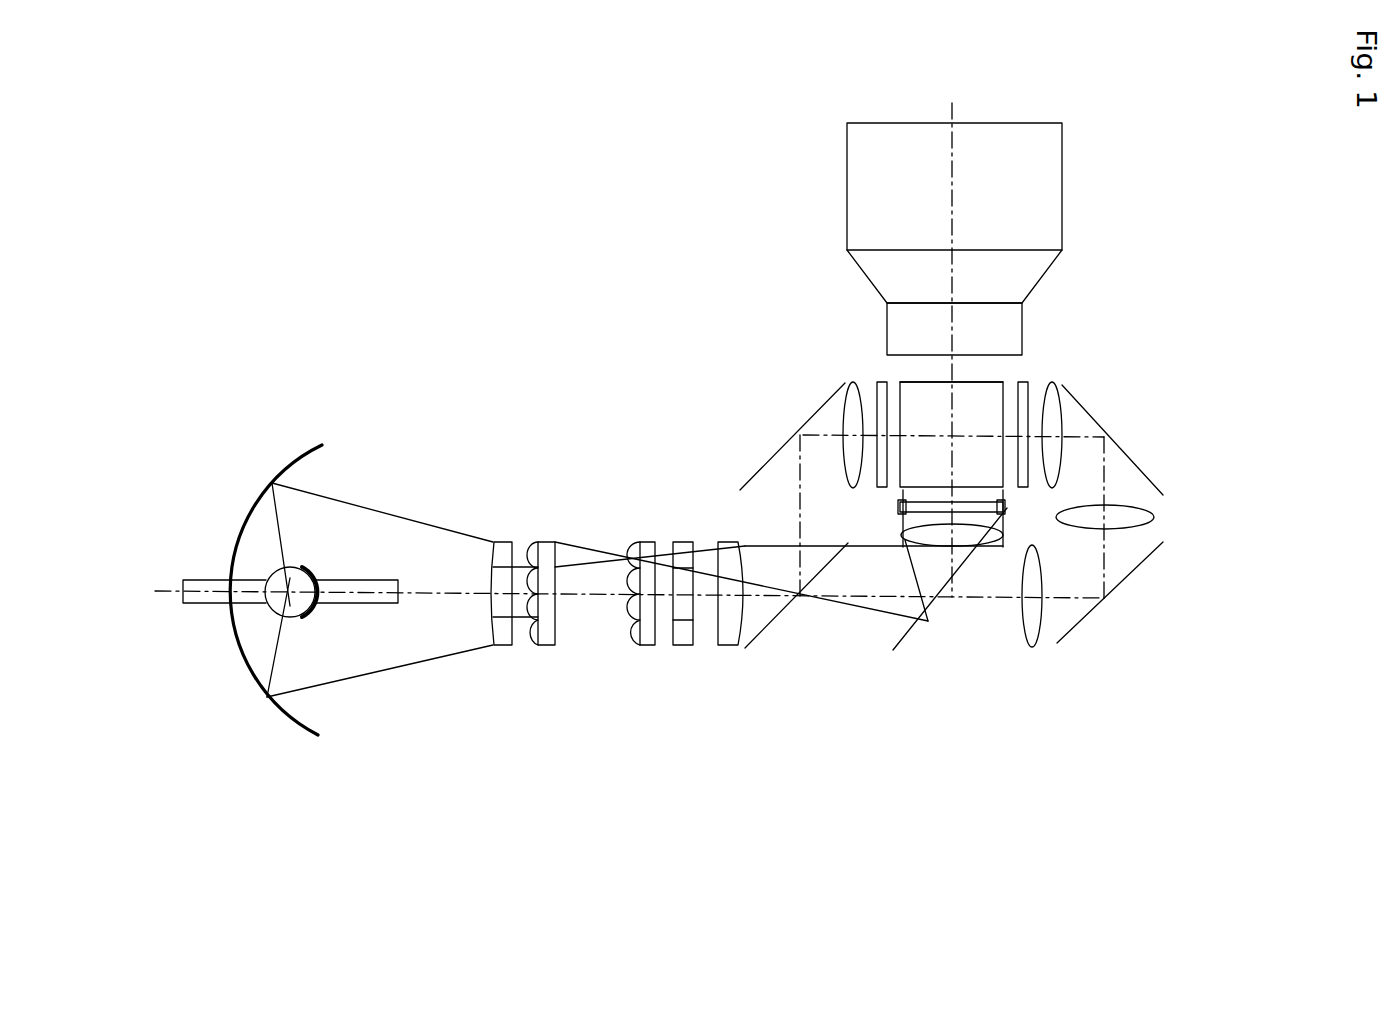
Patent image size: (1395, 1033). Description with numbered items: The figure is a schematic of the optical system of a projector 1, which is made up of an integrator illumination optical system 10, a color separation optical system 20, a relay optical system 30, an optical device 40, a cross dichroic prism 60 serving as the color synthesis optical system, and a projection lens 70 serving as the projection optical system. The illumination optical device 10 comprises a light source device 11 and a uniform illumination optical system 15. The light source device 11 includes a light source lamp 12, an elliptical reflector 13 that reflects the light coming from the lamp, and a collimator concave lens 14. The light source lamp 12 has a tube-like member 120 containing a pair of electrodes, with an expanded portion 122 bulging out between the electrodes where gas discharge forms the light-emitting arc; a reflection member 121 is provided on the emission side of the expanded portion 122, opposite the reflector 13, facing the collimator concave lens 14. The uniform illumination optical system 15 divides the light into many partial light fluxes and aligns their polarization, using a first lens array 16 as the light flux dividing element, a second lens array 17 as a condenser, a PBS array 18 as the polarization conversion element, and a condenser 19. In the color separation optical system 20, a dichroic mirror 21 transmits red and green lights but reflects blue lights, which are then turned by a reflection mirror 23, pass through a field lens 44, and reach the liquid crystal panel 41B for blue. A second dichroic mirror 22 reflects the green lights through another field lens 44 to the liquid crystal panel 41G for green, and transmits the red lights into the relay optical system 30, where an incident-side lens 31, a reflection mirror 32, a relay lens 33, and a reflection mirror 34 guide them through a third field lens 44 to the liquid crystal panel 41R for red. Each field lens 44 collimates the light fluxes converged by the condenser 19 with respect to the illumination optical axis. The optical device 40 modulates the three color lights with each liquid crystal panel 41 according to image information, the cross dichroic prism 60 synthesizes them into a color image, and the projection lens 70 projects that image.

The projector 1 is at (1200, 130).
The integrator illumination optical system 10 is at (364, 415).
The light source device 11 is at (463, 757).
The light source lamp 12 is at (363, 605).
The tube-like member 120 is at (402, 603).
The reflection member 121 is at (317, 562).
The expanded portion 122 is at (290, 563).
The elliptical reflector 13 is at (267, 697).
The collimator concave lens 14 is at (490, 647).
The uniform illumination optical system 15 is at (752, 722).
The first lens array 16 is at (552, 643).
The second lens array 17 is at (645, 643).
The PBS array 18 is at (678, 643).
The condenser 19 is at (727, 643).
The color separation optical system 20 is at (727, 352).
The dichroic mirror 21 is at (780, 617).
The dichroic mirror 22 is at (920, 633).
The reflection mirror 23 is at (820, 408).
The relay optical system 30 is at (1255, 458).
The incident-side lens 31 is at (1030, 648).
The reflection mirror 32 is at (1105, 602).
The relay lens 33 is at (1155, 517).
The reflection mirror 34 is at (1133, 460).
The optical device 40 is at (1005, 386).
The liquid crystal panel 41 is at (960, 494).
The liquid crystal panel for blue 41B is at (876, 382).
The liquid crystal panel for green 41G is at (1003, 512).
The liquid crystal panel for red 41R is at (1028, 385).
The field lens 44 is at (845, 460).
The cross dichroic prism 60 is at (988, 380).
The projection lens 70 is at (1062, 203).